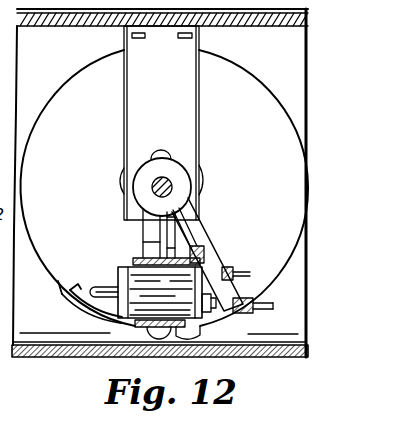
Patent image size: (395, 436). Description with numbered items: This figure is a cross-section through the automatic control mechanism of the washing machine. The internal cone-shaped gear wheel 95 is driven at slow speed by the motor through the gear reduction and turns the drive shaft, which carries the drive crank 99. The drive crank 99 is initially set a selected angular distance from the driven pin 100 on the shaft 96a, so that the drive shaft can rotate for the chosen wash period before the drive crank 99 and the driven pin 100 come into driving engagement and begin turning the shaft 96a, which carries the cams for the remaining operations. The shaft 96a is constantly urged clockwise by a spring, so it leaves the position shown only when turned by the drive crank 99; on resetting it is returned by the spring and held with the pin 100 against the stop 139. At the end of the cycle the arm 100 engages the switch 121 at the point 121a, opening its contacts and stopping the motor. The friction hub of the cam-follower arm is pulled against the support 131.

The internal cone-shaped gear wheel 95 is at (242, 82).
The support 131 is at (299, 91).
The shaft 96a is at (167, 183).
The driven pin 100 is at (199, 237).
The stop 139 is at (204, 248).
The drive crank 99 is at (150, 230).
The switch 121 is at (117, 269).
The point 121a is at (93, 288).